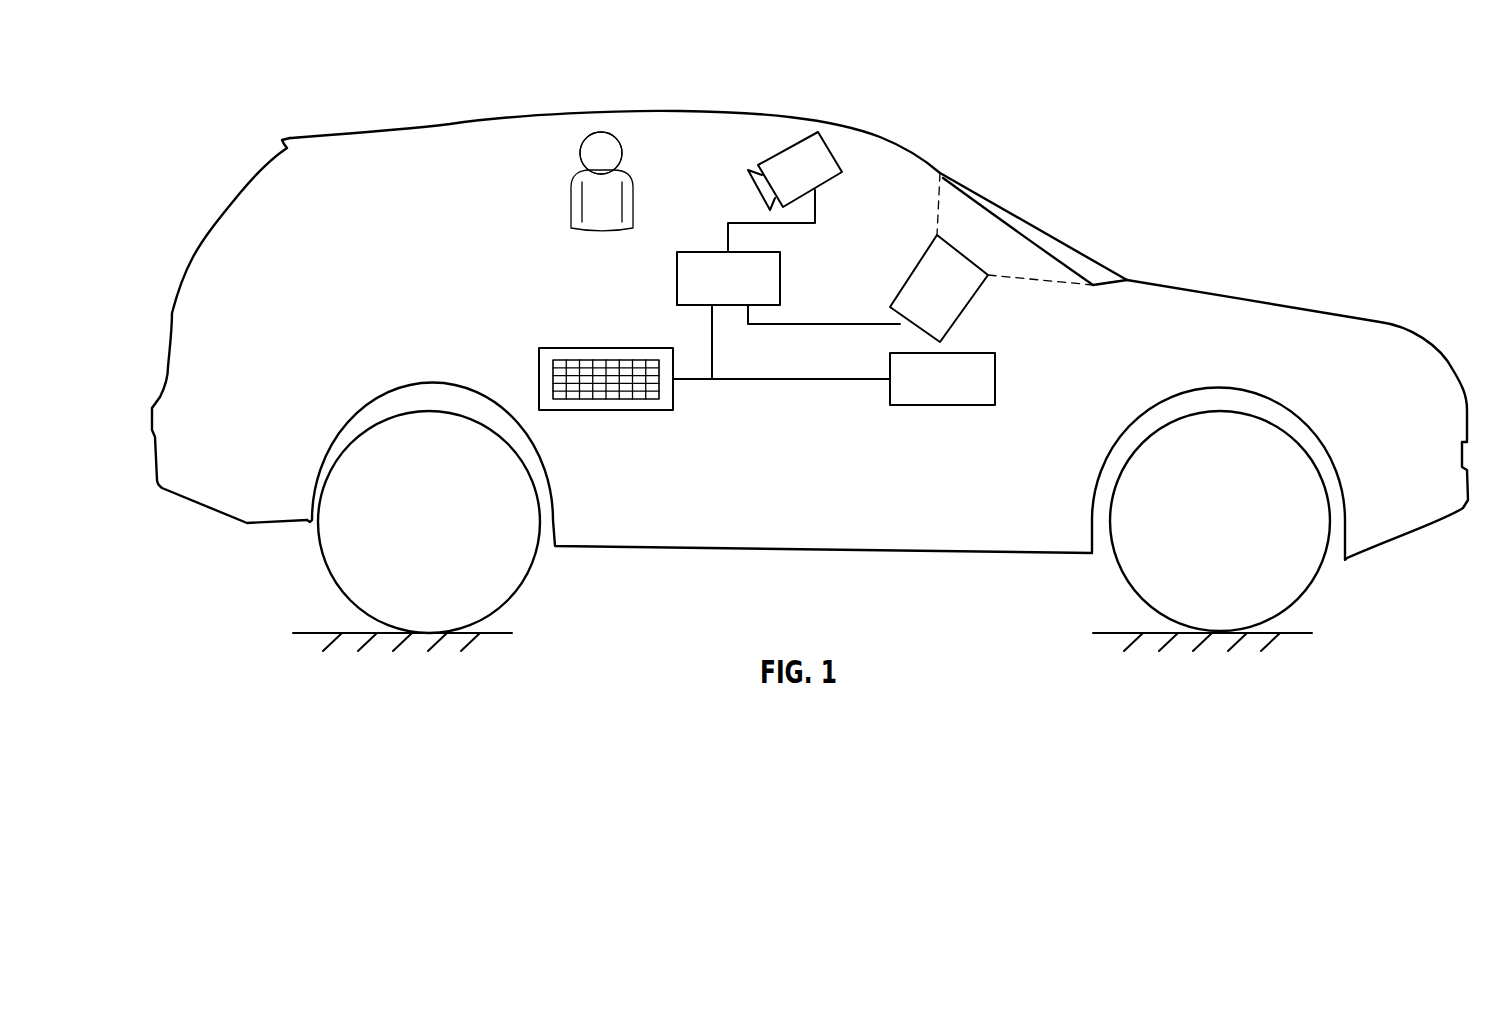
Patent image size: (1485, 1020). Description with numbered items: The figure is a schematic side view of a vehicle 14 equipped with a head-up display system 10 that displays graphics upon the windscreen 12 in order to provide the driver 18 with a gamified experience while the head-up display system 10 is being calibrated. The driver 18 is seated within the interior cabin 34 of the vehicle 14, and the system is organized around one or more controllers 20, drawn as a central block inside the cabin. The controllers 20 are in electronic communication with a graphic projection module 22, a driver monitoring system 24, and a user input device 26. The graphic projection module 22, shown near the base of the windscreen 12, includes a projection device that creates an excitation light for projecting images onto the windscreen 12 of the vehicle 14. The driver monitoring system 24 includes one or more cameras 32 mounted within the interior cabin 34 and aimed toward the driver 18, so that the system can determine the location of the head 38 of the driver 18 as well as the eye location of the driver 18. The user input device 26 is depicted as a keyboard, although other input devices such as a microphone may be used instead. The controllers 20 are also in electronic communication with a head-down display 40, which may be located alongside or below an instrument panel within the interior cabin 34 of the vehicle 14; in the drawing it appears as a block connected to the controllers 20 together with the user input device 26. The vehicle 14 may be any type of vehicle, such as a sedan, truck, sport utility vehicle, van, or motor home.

The head-up display system 10 is at (453, 237).
The windscreen 12 is at (1043, 227).
The vehicle 14 is at (164, 372).
The driver 18 is at (560, 230).
The controllers 20 is at (742, 294).
The graphic projection module 22 is at (952, 305).
The driver monitoring system 24 is at (795, 137).
The user input device 26 is at (592, 411).
The cameras 32 is at (814, 185).
The interior cabin 34 is at (489, 172).
The head 38 is at (600, 132).
The head-down display 40 is at (956, 395).